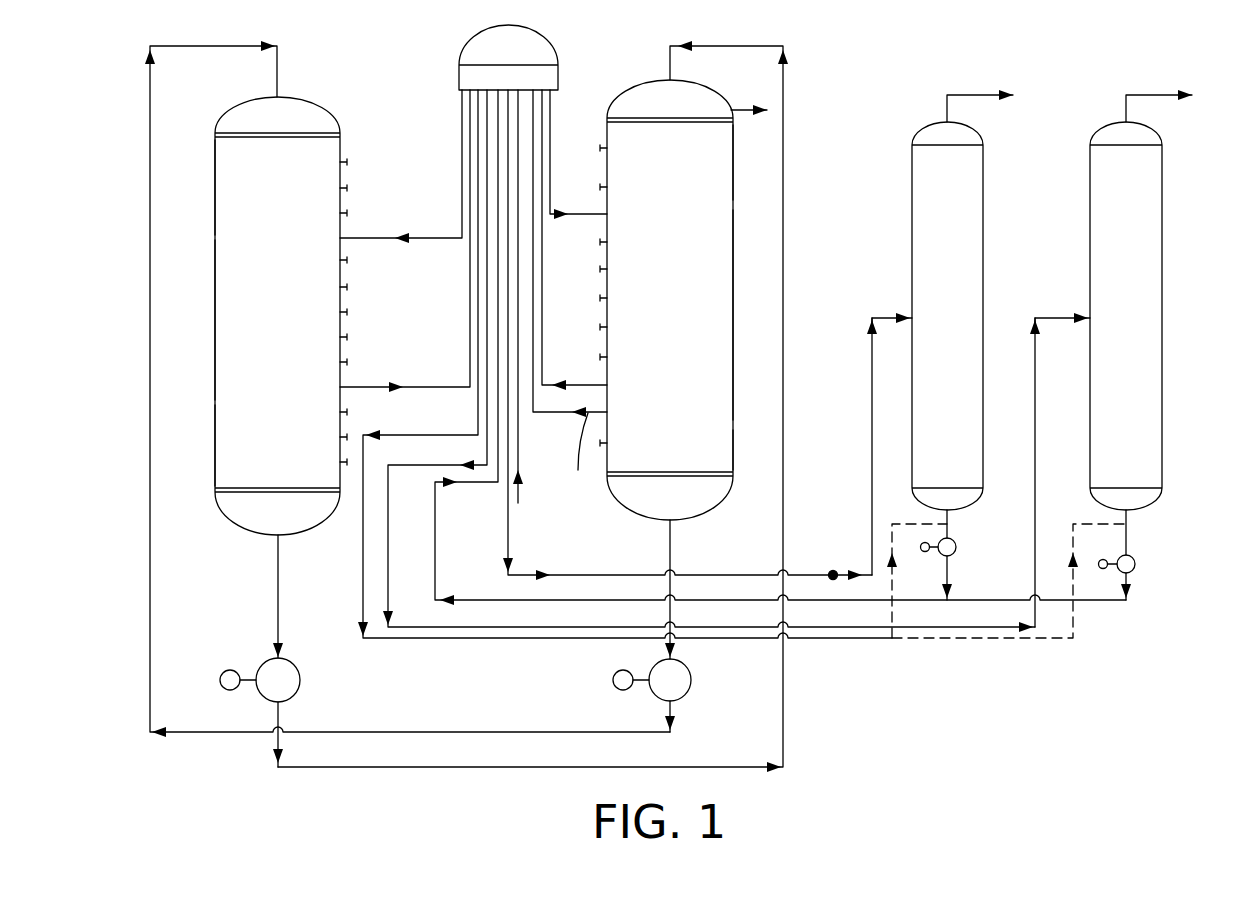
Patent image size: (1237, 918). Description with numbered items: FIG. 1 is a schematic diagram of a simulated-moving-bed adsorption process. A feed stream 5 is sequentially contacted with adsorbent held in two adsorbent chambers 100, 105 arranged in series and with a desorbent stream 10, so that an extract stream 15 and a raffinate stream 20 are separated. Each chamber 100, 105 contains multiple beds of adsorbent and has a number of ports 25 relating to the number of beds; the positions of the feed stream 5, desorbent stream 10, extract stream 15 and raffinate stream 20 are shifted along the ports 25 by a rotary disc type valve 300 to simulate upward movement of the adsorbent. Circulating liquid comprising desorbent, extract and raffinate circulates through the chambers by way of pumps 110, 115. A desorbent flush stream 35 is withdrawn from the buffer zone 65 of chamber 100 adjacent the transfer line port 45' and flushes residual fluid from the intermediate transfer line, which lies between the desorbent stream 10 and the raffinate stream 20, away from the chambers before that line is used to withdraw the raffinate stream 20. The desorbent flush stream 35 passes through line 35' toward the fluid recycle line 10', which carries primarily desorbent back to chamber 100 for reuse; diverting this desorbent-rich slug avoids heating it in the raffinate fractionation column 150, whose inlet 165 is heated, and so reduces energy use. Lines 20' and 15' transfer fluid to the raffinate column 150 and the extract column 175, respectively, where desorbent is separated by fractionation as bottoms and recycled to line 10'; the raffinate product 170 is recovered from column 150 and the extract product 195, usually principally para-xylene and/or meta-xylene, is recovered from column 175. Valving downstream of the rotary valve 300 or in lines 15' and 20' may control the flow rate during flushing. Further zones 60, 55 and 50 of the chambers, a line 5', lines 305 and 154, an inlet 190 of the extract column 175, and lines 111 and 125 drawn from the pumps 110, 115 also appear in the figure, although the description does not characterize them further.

The adsorbent chamber 100 is at (315, 306).
The adsorbent chamber 105 is at (715, 92).
The rotary disc type valve 300 is at (540, 32).
The raffinate fractionation column 150 is at (975, 125).
The extract fractionation column 175 is at (1155, 125).
The pump 110 is at (300, 680).
The pump 115 is at (692, 680).
The ports 25 is at (348, 162).
The buffer zone 65 is at (222, 155).
The middle column section 60 is at (222, 330).
The column section 55 is at (222, 475).
The middle section of second column 50 is at (733, 290).
The desorbent stream 10 is at (401, 166).
The extract stream 15 is at (405, 241).
The feed stream 5 is at (578, 176).
The raffinate stream 20 is at (574, 240).
The desorbent flush stream 35 is at (566, 453).
The transfer line port 45' is at (578, 315).
The line 35' is at (598, 364).
The line 15' is at (709, 361).
The fluid recycle line 10' is at (760, 347).
The line 20' is at (667, 335).
The heat exchanger stream 5' is at (529, 308).
The stream to first separator 305 is at (870, 443).
The stream to second separator 154 is at (1035, 405).
The raffinate fractionation column inlet 165 is at (882, 316).
The inlet line to second separator 190 is at (1044, 316).
The raffinate product 170 is at (982, 93).
The extract product 195 is at (1162, 93).
The bottoms recycle line from first pump 111 is at (447, 730).
The bottoms recycle line from second pump 125 is at (735, 762).